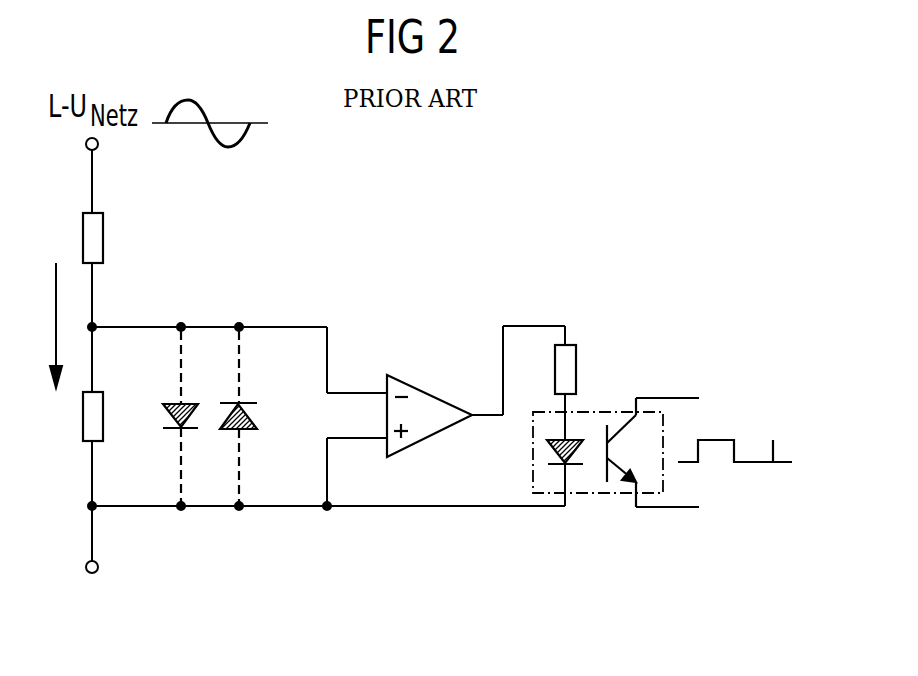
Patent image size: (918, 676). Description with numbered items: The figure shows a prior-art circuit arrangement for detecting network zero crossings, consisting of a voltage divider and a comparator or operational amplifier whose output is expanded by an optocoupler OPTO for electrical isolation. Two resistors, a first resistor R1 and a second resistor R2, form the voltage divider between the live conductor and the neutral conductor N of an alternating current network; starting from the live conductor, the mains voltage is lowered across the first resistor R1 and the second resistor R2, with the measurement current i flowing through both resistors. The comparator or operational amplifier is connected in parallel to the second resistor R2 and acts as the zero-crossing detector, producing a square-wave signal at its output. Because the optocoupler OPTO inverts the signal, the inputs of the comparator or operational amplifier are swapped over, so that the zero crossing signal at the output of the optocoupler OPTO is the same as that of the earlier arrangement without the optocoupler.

The first resistor R1 is at (74, 238).
The second resistor R2 is at (74, 416).
The measurement current i is at (52, 325).
The neutral conductor N is at (93, 587).
The optocoupler OPTO is at (632, 436).